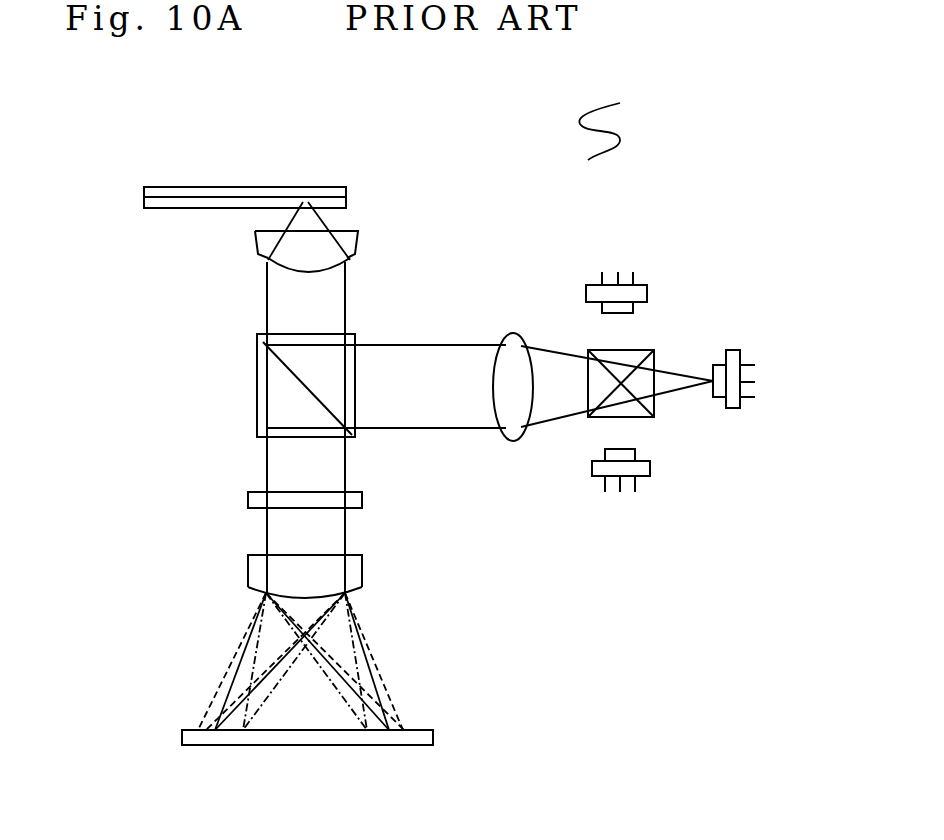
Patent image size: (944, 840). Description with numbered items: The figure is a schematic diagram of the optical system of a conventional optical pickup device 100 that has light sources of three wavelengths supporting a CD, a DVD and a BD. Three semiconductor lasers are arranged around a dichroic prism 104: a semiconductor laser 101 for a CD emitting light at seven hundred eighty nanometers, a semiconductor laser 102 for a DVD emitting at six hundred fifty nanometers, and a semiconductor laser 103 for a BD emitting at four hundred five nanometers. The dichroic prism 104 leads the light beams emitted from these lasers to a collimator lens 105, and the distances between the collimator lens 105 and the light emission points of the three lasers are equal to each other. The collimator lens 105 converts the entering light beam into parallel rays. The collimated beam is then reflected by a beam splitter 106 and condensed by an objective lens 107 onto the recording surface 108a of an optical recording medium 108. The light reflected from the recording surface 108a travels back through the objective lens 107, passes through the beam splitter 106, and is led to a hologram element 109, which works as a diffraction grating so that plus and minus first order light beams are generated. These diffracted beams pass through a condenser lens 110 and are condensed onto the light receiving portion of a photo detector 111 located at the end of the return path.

The optical pickup device 100 is at (665, 102).
The semiconductor laser for a CD 101 is at (642, 290).
The semiconductor laser for a DVD 102 is at (735, 365).
The semiconductor laser for a BD 103 is at (633, 470).
The dichroic prism 104 is at (654, 412).
The collimator lens 105 is at (518, 415).
The beam splitter 106 is at (258, 372).
The objective lens 107 is at (353, 242).
The optical recording medium 108 is at (248, 187).
The recording surface 108a is at (346, 197).
The hologram element 109 is at (250, 497).
The condenser lens 110 is at (250, 562).
The photo detector 111 is at (420, 738).